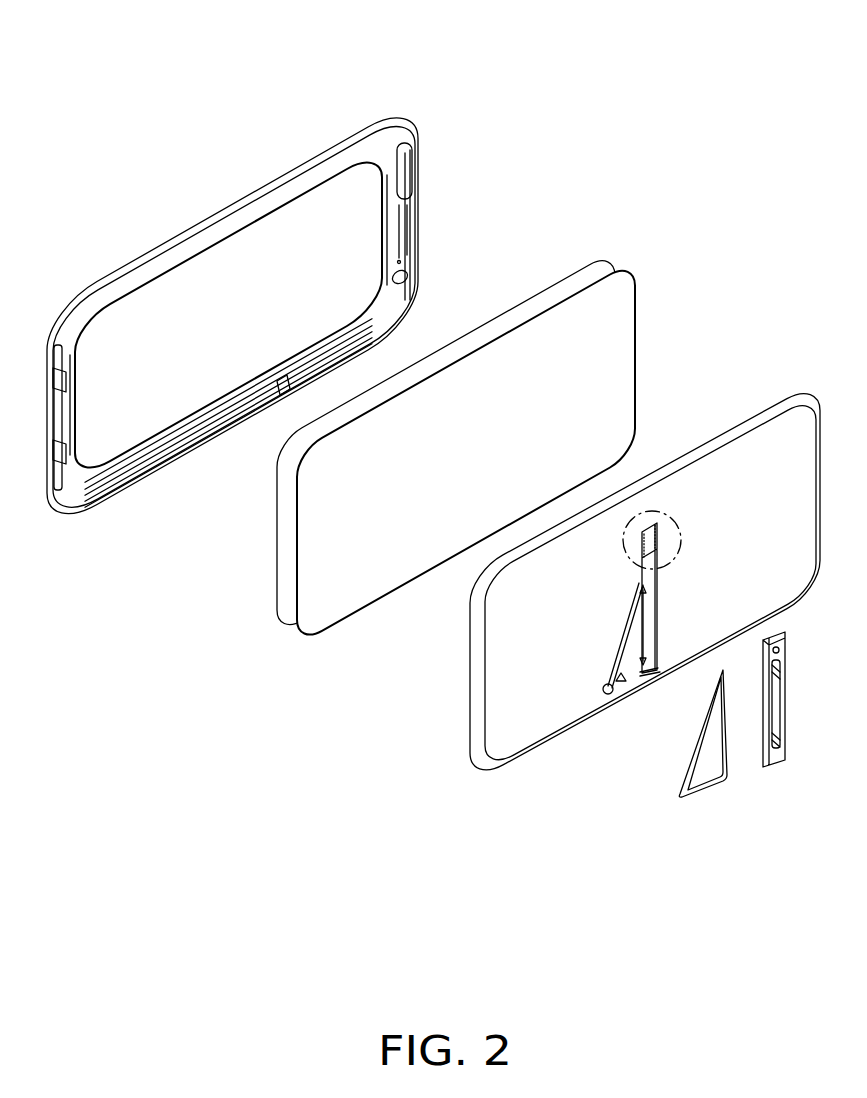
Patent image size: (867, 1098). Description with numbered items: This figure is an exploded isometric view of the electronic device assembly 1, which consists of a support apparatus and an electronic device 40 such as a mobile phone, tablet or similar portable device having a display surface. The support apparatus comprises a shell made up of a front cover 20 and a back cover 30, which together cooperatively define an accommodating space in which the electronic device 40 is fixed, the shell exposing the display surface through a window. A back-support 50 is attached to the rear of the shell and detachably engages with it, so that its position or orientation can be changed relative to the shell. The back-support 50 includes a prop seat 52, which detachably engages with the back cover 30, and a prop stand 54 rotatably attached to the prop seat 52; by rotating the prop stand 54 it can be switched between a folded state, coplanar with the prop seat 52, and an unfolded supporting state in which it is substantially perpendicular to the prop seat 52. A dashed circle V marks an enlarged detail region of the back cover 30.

The electronic device assembly 1 is at (519, 58).
The front cover 20 is at (237, 216).
The back cover 30 is at (645, 593).
The electronic device 40 is at (342, 595).
The back-support 50 is at (755, 755).
The prop seat 52 is at (791, 729).
The prop stand 54 is at (708, 782).
The detail region V is at (673, 522).